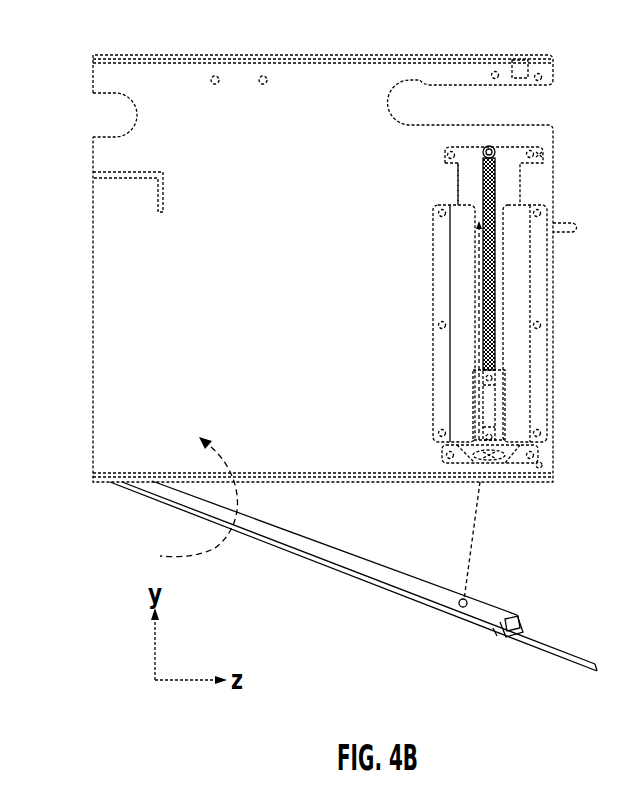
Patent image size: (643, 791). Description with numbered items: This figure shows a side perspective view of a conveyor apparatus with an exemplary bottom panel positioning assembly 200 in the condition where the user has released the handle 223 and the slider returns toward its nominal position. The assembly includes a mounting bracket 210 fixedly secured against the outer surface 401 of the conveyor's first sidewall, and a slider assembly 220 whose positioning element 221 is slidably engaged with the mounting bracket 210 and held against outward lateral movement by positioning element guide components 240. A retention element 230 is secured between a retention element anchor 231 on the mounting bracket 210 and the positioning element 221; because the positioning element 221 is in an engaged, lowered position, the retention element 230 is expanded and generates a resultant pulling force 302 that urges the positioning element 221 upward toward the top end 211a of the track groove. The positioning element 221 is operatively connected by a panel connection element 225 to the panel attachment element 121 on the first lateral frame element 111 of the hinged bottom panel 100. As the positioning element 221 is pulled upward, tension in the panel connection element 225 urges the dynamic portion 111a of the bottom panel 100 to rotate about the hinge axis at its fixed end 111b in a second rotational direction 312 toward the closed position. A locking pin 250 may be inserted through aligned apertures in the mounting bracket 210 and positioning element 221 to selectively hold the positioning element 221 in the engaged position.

The bottom panel positioning assembly 200 is at (548, 130).
The mounting bracket 210 is at (522, 176).
The top end of the positioning element track groove 211a is at (468, 174).
The slider assembly 220 is at (406, 345).
The positioning element 221 is at (498, 415).
The handle 223 is at (489, 400).
The panel connection element 225 is at (484, 533).
The retention element 230 is at (496, 198).
The retention element anchor 231 is at (491, 147).
The positioning element guide component 240 is at (522, 283).
The locking pin 250 is at (510, 458).
The resultant pulling force 302 is at (476, 252).
The second rotational direction 312 is at (250, 493).
The outer surface of the first sidewall 401 is at (265, 305).
The bottom panel 100 is at (373, 533).
The first lateral frame element 111 is at (323, 554).
The dynamic portion 111a is at (478, 642).
The fixed end 111b is at (111, 496).
The panel attachment element 121 is at (468, 602).